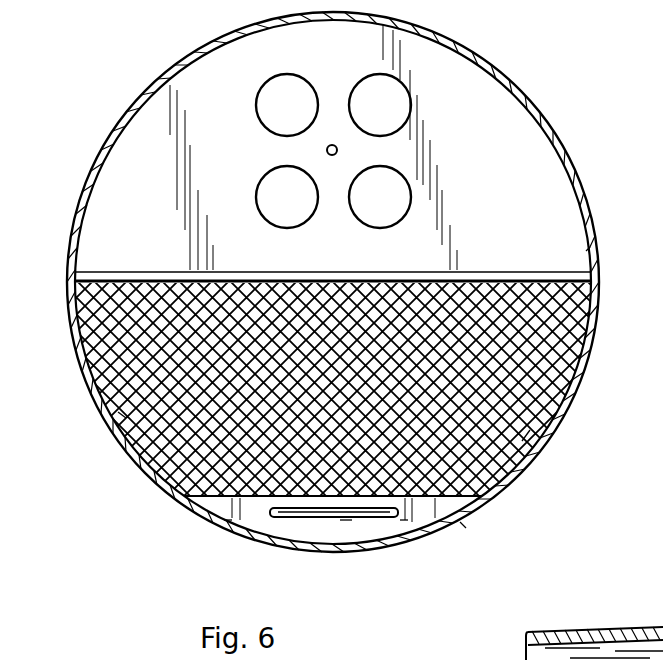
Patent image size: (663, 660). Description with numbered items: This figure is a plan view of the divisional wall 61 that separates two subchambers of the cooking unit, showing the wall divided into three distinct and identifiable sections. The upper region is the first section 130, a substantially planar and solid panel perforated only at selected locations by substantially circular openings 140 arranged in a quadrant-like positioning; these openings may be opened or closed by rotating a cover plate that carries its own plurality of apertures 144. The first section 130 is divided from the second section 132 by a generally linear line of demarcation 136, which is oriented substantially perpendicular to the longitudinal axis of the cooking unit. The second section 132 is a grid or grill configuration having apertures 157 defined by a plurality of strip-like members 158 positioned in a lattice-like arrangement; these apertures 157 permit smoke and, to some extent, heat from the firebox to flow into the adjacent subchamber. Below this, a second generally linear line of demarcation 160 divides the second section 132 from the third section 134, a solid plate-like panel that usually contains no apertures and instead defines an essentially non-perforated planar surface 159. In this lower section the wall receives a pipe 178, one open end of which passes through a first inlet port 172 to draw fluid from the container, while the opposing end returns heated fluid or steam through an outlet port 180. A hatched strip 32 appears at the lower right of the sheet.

The first section 130 is at (500, 115).
The openings 140 is at (364, 86).
The apertures 144 is at (326, 150).
The line of demarcation 136 is at (521, 243).
The divisional wall 61 is at (590, 247).
The second section 132 is at (582, 360).
The apertures 157 is at (556, 396).
The strip-like members 158 is at (118, 412).
The pipe 178 is at (280, 520).
The planar surface 159 is at (348, 530).
The outlet port 180 is at (404, 520).
The first inlet port 172 is at (228, 520).
The line of demarcation 160 is at (472, 497).
The third section 134 is at (462, 524).
The cover strip 32 is at (622, 628).